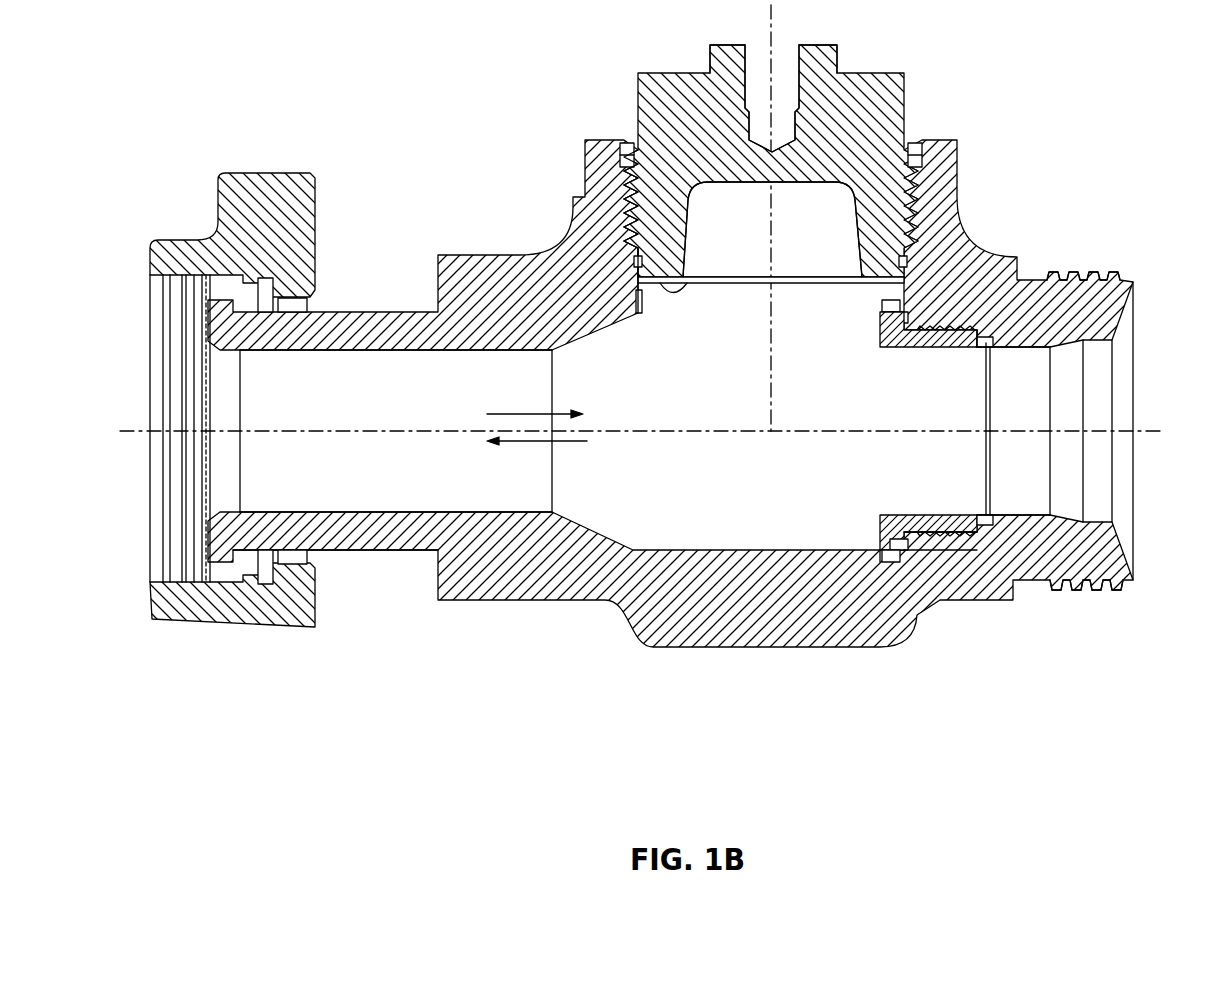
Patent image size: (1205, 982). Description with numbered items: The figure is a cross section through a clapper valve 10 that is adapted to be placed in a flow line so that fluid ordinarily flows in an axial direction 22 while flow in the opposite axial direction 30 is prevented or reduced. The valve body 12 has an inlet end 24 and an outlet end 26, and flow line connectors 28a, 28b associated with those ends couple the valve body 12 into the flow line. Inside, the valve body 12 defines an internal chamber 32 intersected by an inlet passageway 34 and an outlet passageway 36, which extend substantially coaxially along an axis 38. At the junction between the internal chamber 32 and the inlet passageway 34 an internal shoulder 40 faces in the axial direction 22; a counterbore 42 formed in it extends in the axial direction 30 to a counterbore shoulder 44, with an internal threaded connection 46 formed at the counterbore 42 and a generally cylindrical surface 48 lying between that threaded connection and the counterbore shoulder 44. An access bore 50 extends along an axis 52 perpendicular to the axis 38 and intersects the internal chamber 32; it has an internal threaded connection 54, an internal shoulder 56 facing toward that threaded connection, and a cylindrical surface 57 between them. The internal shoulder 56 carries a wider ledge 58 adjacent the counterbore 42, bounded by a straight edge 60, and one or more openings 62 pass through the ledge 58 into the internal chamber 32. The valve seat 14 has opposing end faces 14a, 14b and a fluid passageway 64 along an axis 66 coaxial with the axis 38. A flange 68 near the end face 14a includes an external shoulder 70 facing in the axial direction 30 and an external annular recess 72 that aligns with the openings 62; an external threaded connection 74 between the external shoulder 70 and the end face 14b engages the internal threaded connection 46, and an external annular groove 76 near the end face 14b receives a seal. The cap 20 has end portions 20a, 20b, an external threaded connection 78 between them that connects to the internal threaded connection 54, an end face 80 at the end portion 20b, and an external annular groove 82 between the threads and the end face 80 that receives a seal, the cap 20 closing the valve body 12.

The clapper valve 10 is at (426, 108).
The valve body 12 is at (510, 595).
The valve seat 14 is at (940, 523).
The end face 14a is at (880, 525).
The end face 14b is at (992, 338).
The cap 20 is at (907, 93).
The end portion 20a is at (672, 72).
The end portion 20b is at (633, 257).
The axial direction 22 is at (527, 444).
The inlet end 24 is at (1037, 580).
The outlet end 26 is at (360, 550).
The flow line connector 28a is at (1090, 277).
The flow line connector 28b is at (175, 240).
The axial direction 30 is at (527, 412).
The internal chamber 32 is at (742, 505).
The inlet passageway 34 is at (1038, 482).
The outlet passageway 36 is at (395, 477).
The axis 38 is at (327, 432).
The internal shoulder 40 is at (907, 548).
The counterbore 42 is at (948, 530).
The counterbore shoulder 44 is at (984, 518).
The internal threaded connection 46 is at (940, 323).
The cylindrical surface 48 is at (986, 337).
The access bore 50 is at (820, 220).
The axis 52 is at (774, 34).
The internal threaded connection 54 is at (627, 174).
The internal shoulder 56 is at (640, 300).
The cylindrical surface 57 is at (638, 247).
The ledge 58 is at (933, 297).
The edge 60 is at (897, 290).
The openings 62 is at (890, 305).
The fluid passageway 64 is at (927, 418).
The axis 66 is at (1143, 431).
The flange 68 is at (910, 562).
The external shoulder 70 is at (957, 560).
The external annular recess 72 is at (885, 560).
The external threaded connection 74 is at (950, 525).
The external annular groove 76 is at (980, 318).
The external threaded connection 78 is at (621, 180).
The end face 80 is at (673, 280).
The external annular groove 82 is at (634, 270).